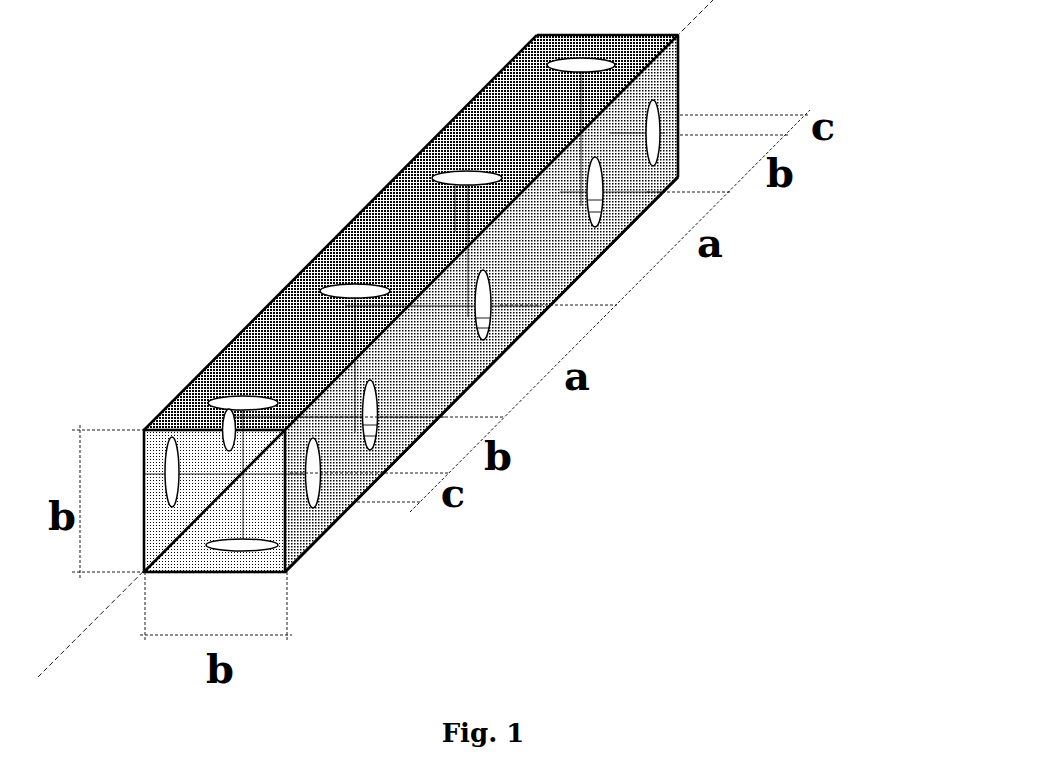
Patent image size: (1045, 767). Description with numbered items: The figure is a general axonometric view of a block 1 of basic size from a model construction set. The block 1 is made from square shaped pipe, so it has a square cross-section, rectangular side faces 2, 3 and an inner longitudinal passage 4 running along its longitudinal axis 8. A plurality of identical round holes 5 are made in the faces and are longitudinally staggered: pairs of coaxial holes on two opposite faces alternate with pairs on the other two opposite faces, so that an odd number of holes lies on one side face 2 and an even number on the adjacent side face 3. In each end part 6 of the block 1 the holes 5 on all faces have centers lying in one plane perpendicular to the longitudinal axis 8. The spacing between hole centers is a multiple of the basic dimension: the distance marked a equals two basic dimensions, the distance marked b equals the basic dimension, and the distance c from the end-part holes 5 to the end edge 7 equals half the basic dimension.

The block 1 is at (455, 303).
The side face of the block 2 is at (582, 303).
The side face of the block 3 is at (411, 234).
The longitudinal passage 4 is at (157, 472).
The holes 5 is at (480, 305).
The end part of a block 6 is at (382, 232).
The end edge 7 is at (442, 374).
The longitudinal axis of the block 8 is at (489, 338).